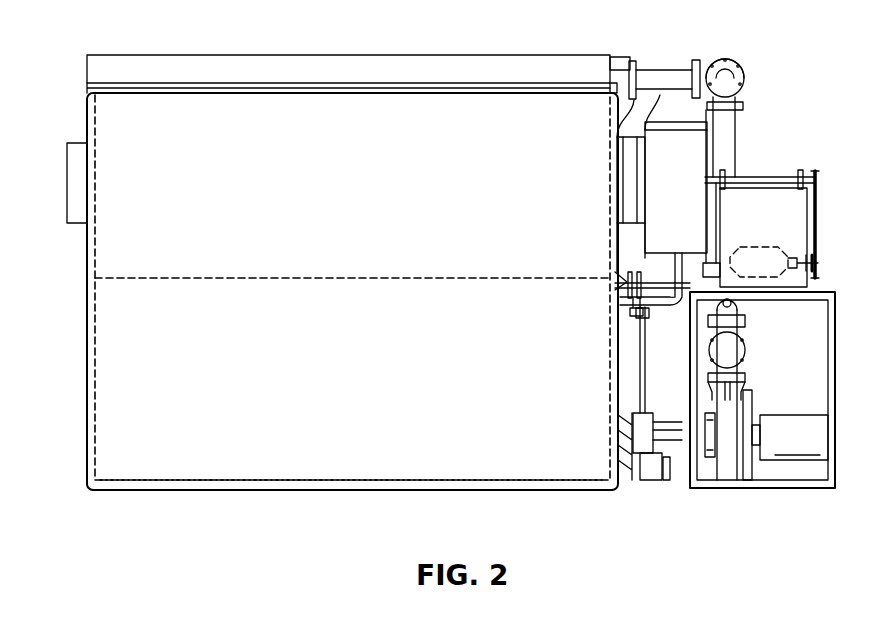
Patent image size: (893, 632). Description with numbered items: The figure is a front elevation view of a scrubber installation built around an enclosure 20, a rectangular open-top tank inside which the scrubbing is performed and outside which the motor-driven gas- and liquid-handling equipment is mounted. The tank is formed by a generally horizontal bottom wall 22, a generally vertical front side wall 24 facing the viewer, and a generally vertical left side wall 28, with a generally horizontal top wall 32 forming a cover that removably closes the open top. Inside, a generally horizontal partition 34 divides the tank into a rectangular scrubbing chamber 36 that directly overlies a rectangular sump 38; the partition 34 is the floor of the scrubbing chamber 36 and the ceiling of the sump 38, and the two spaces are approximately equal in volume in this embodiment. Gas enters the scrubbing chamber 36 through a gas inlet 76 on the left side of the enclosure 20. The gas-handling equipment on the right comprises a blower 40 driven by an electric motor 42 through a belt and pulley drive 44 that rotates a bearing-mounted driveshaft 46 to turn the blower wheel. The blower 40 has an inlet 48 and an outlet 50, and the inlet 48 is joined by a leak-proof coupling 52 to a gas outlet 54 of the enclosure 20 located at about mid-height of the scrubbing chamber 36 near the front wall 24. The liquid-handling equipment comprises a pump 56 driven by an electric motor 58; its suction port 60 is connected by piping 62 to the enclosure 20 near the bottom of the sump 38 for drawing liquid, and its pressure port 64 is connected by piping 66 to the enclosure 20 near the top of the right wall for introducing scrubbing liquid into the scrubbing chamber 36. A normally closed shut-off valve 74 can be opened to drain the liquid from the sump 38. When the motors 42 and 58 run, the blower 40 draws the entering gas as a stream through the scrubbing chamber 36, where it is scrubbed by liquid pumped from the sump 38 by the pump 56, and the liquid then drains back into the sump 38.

The enclosure 20 is at (87, 257).
The bottom wall 22 is at (200, 490).
The front side wall 24 is at (347, 387).
The left side wall 28 is at (87, 396).
The top wall 32 is at (552, 62).
The partition 34 is at (122, 280).
The scrubbing chamber 36 is at (205, 125).
The sump 38 is at (330, 465).
The blower 40 is at (683, 150).
The electric motor 42 is at (800, 245).
The belt and pulley drive 44 is at (817, 207).
The driveshaft 46 is at (752, 177).
The inlet 48 is at (688, 120).
The outlet 50 is at (718, 60).
The leak-proof coupling 52 is at (630, 225).
The gas outlet 54 is at (623, 137).
The pump 56 is at (733, 473).
The electric motor 58 is at (800, 448).
The suction port 60 is at (710, 462).
The piping 62 is at (668, 427).
The pressure port 64 is at (742, 370).
The piping 66 is at (735, 80).
The shut-off valve 74 is at (652, 478).
The gas inlet 76 is at (80, 143).